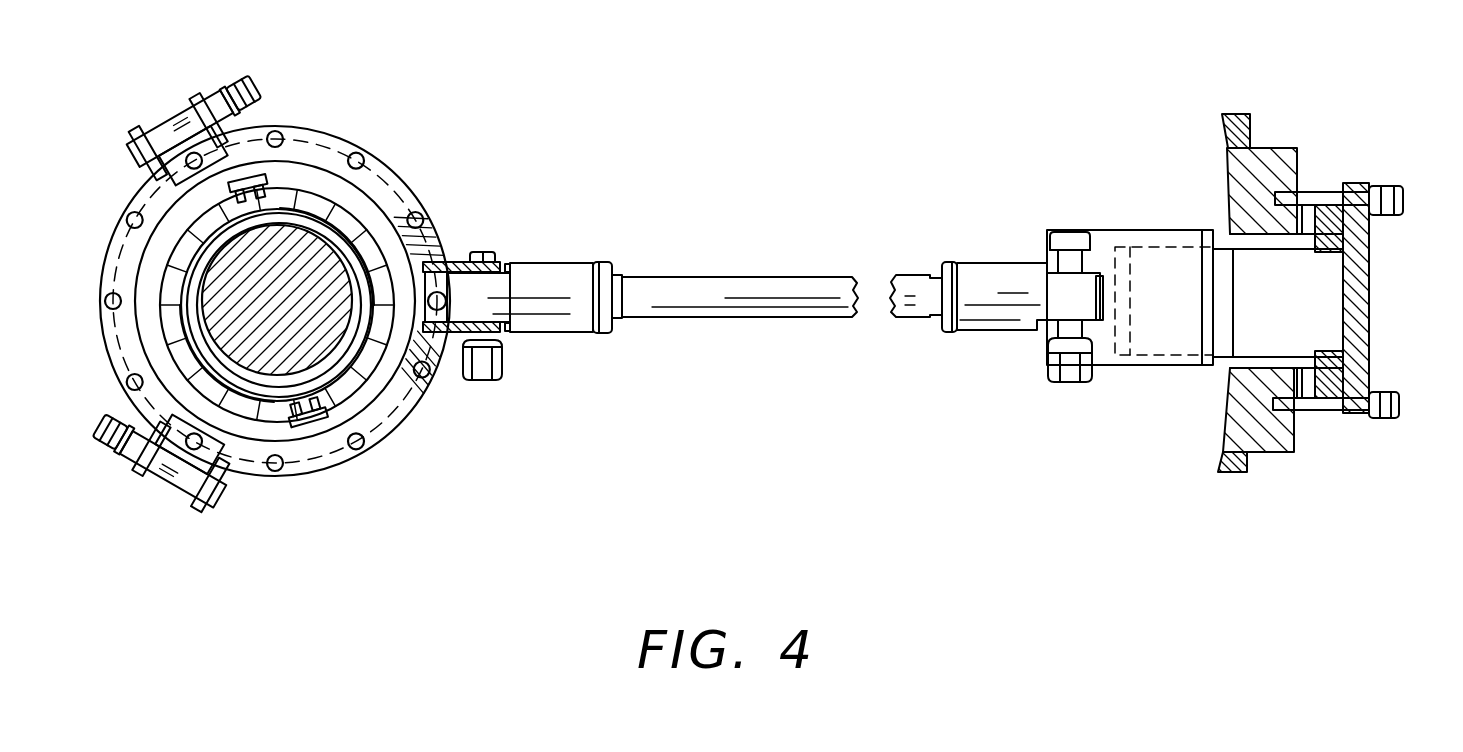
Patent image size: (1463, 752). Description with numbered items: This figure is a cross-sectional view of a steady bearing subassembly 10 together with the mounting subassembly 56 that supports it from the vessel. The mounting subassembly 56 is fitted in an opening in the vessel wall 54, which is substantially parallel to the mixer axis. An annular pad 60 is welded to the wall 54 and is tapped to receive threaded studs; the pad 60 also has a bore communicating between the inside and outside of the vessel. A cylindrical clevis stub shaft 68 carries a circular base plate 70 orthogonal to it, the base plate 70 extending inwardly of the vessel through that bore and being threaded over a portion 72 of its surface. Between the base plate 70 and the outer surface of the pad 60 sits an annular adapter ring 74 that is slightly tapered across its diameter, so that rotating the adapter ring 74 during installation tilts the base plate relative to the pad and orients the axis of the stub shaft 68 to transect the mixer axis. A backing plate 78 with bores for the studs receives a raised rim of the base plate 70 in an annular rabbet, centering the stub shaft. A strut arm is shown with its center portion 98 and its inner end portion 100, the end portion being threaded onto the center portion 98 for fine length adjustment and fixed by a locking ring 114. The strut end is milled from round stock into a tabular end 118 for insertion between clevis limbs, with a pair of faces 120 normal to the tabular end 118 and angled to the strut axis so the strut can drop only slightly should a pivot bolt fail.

The steady bearing subassembly 10 is at (472, 286).
The wall 54 is at (1235, 113).
The mounting subassembly 56 is at (1170, 259).
The annular pad 60 is at (1233, 176).
The cylindrical clevis stub shaft 68 is at (1252, 334).
The circular base plate 70 is at (1340, 228).
The threaded portion 72 is at (1162, 333).
The annular adapter ring 74 is at (1308, 388).
The backing plate 78 is at (1346, 340).
The center portion 98 is at (782, 313).
The inner end portion 100 is at (543, 264).
The locking ring 114 is at (607, 263).
The tabular end 118 is at (1056, 292).
The faces 120 is at (1032, 328).